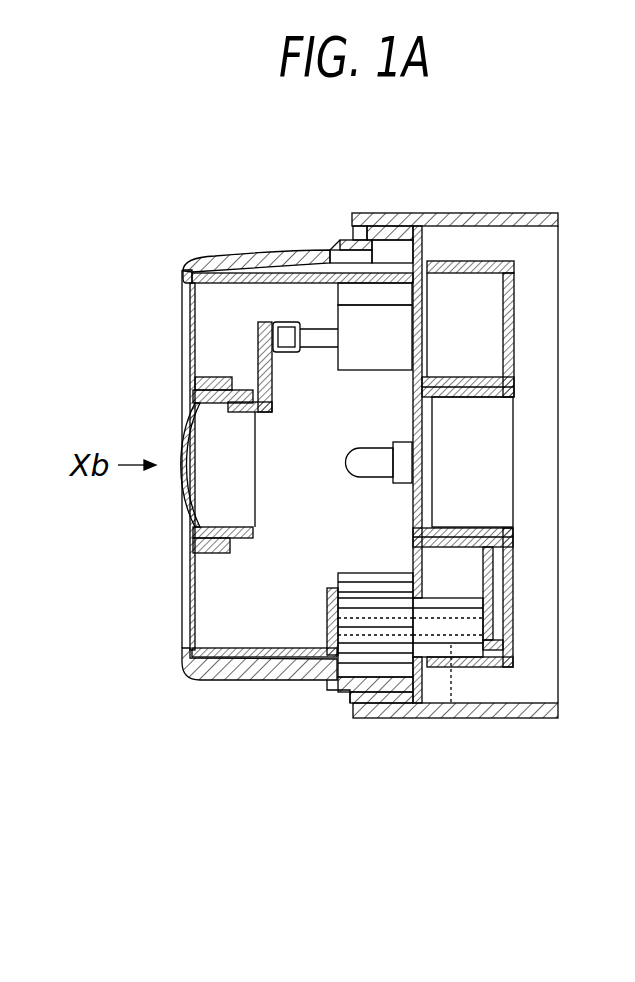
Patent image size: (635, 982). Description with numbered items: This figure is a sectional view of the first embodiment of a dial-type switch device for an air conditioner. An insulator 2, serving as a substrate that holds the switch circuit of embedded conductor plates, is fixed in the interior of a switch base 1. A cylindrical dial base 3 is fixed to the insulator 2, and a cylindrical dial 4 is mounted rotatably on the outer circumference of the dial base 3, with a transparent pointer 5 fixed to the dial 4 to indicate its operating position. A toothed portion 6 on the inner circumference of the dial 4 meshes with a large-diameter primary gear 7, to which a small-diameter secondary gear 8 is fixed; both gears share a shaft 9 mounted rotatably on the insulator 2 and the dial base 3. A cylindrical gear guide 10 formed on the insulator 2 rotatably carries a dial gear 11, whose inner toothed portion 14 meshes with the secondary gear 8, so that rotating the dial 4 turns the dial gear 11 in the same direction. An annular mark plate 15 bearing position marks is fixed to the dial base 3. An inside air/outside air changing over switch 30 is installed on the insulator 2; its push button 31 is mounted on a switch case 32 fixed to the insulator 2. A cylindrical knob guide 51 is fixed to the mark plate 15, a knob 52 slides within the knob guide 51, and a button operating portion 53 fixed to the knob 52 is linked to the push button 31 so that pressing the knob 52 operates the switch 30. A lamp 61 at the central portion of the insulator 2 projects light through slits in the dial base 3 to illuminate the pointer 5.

The switch base 1 is at (426, 212).
The insulator 2 is at (412, 507).
The dial base 3 is at (267, 262).
The dial 4 is at (226, 680).
The pointer 5 is at (184, 268).
The toothed portion 6 is at (352, 252).
The primary gear 7 is at (352, 680).
The secondary gear 8 is at (450, 603).
The shaft 9 is at (451, 705).
The gear guide 10 is at (460, 382).
The dial gear 11 is at (514, 323).
The toothed portion 14 is at (486, 261).
The mark plate 15 is at (190, 600).
The inside air/outside air changing over switch 30 is at (332, 296).
The push button 31 is at (277, 322).
The switch case 32 is at (335, 355).
The knob guide 51 is at (215, 378).
The knob 52 is at (193, 398).
The button operating portion 53 is at (258, 334).
The lamp 61 is at (348, 452).